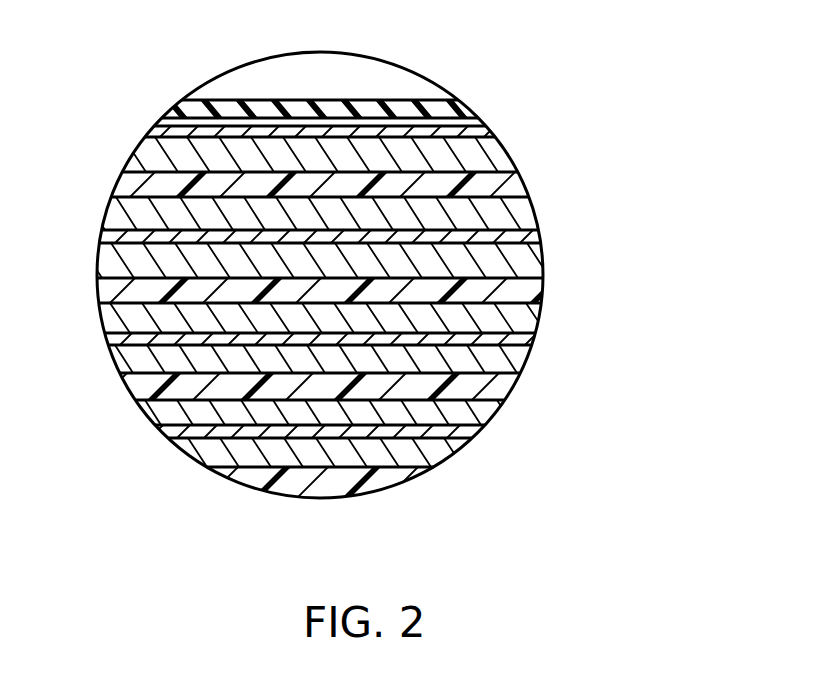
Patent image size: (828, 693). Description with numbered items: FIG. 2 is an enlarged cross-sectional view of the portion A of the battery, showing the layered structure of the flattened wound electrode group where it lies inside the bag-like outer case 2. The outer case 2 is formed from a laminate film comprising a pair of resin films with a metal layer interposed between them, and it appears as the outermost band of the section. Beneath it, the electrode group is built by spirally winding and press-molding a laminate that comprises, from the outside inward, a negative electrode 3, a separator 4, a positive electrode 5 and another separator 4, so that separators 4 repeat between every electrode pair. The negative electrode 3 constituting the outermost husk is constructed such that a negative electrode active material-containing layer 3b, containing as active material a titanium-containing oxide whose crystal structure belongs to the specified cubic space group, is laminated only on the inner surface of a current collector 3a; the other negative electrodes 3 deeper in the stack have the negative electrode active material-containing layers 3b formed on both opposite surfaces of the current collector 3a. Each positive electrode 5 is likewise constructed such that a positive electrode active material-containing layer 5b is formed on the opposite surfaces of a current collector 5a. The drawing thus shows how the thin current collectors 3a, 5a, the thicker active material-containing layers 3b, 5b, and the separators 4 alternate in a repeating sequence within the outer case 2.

The portion A is at (217, 87).
The outer case 2 is at (467, 106).
The negative electrode 3 is at (593, 73).
The current collector 3a is at (487, 132).
The negative electrode active material-containing layer 3b is at (493, 157).
The separator 4 is at (128, 183).
The positive electrode 5 is at (630, 165).
The current collector 5a is at (516, 238).
The positive electrode active material-containing layer 5b is at (515, 205).